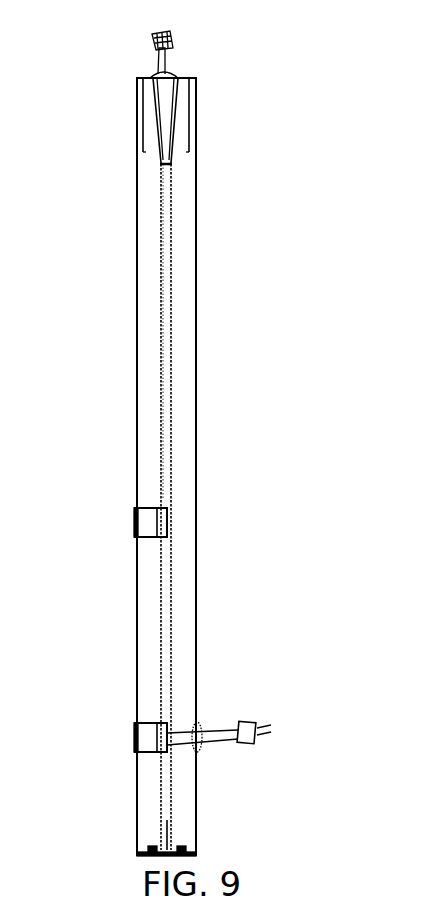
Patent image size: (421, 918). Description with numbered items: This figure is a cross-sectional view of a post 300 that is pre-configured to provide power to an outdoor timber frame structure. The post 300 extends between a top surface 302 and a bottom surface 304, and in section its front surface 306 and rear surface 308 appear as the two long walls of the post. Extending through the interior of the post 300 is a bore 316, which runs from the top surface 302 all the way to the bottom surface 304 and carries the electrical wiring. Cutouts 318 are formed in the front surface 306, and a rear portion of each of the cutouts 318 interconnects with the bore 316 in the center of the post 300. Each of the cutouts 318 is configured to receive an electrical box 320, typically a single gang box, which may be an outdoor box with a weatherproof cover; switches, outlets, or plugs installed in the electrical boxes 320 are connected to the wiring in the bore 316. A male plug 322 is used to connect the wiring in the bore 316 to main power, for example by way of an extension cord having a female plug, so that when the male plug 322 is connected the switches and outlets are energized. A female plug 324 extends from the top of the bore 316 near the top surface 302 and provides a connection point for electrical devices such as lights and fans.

The post 300 is at (207, 331).
The top surface 302 is at (192, 77).
The bottom surface 304 is at (148, 858).
The front surface 306 is at (138, 403).
The rear surface 308 is at (198, 410).
The bore 316 is at (169, 220).
The cutouts 318 is at (167, 520).
The electrical box 320 is at (150, 522).
The male plug 322 is at (250, 722).
The female plug 324 is at (158, 62).